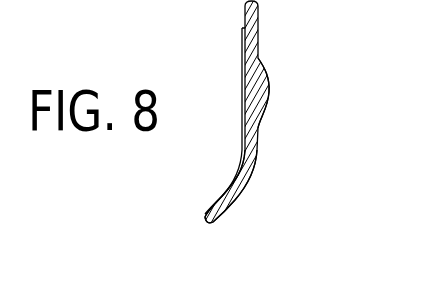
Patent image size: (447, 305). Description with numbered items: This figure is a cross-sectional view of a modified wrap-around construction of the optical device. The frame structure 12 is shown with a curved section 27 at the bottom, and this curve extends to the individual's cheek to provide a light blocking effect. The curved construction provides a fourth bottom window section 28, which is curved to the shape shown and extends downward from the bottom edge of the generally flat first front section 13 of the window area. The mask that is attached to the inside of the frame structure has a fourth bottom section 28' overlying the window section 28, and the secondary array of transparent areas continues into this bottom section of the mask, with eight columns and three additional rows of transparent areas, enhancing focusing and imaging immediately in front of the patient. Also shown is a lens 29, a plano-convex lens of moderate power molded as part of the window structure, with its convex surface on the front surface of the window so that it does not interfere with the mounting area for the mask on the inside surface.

The frame structure 12 is at (258, 14).
The first front section 13 is at (242, 54).
The lens 29 is at (268, 92).
The fourth bottom section 28' is at (210, 183).
The fourth bottom window section 28 is at (270, 175).
The curved section 27 is at (238, 200).